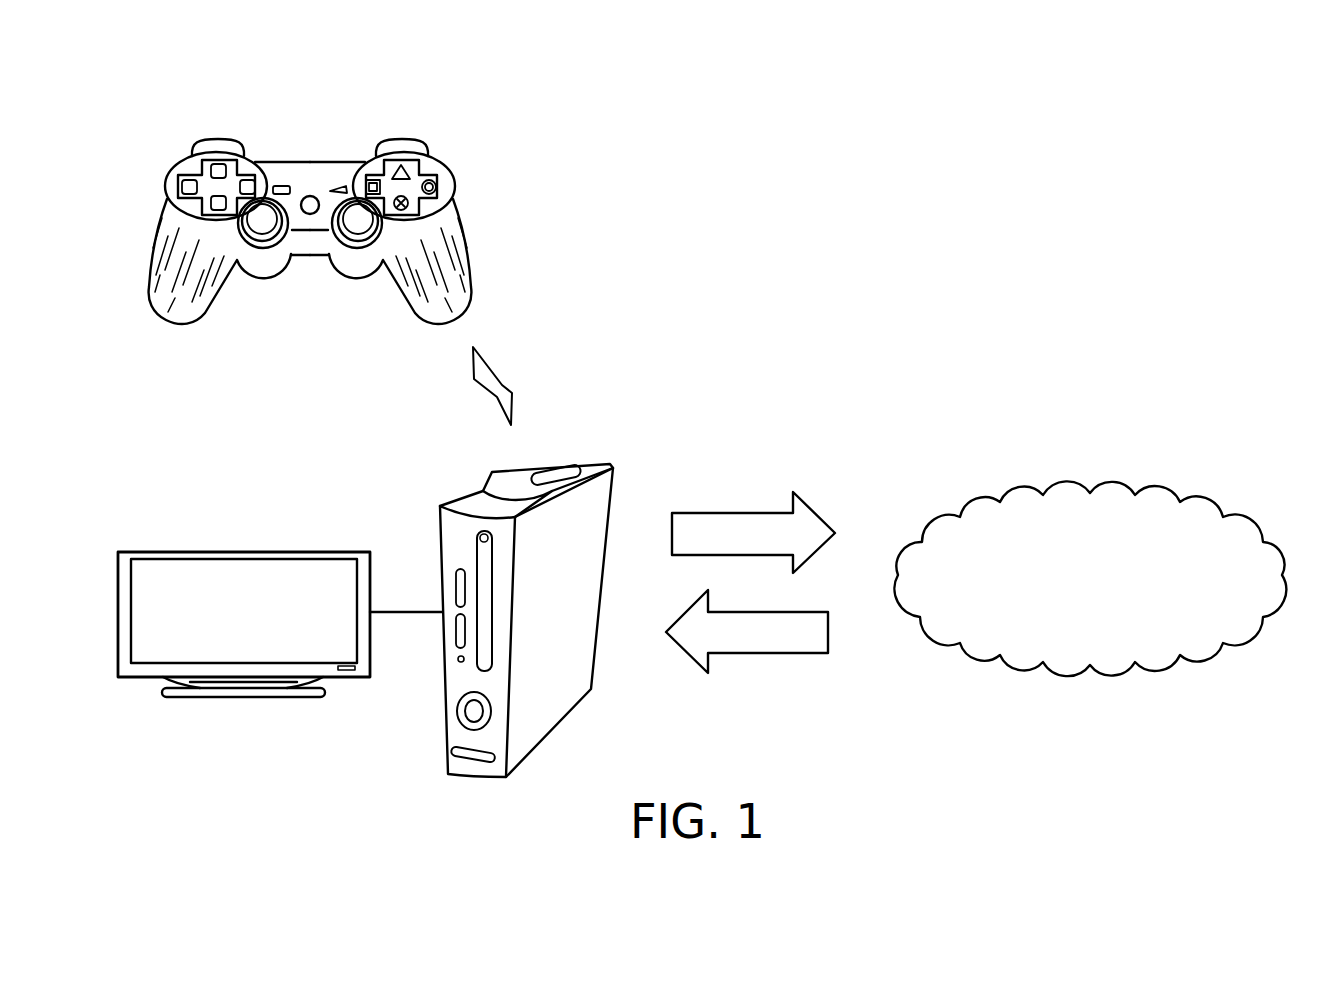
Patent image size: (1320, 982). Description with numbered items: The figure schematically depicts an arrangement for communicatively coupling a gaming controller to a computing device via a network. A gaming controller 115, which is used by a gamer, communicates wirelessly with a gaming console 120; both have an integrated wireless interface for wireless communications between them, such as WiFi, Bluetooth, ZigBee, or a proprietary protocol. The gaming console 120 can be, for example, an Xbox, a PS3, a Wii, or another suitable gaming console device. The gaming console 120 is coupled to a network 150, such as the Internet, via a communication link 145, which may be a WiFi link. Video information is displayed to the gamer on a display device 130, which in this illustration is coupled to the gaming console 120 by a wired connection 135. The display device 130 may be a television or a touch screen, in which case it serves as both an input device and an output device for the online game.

The gaming controller 115 is at (463, 146).
The gaming console 120 is at (620, 436).
The display device 130 is at (248, 532).
The wired connection 135 is at (403, 572).
The communication link 145 is at (782, 467).
The network 150 is at (1110, 605).